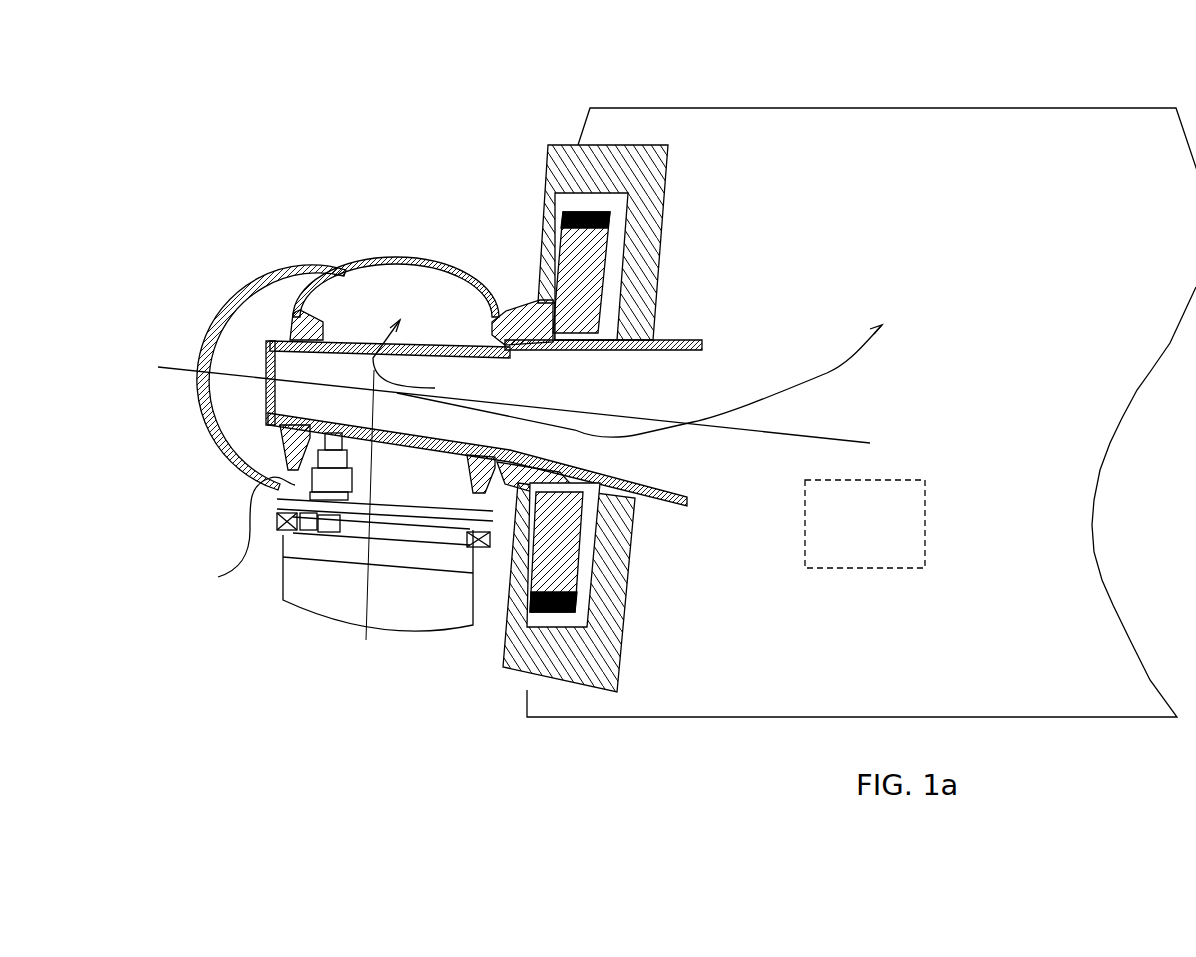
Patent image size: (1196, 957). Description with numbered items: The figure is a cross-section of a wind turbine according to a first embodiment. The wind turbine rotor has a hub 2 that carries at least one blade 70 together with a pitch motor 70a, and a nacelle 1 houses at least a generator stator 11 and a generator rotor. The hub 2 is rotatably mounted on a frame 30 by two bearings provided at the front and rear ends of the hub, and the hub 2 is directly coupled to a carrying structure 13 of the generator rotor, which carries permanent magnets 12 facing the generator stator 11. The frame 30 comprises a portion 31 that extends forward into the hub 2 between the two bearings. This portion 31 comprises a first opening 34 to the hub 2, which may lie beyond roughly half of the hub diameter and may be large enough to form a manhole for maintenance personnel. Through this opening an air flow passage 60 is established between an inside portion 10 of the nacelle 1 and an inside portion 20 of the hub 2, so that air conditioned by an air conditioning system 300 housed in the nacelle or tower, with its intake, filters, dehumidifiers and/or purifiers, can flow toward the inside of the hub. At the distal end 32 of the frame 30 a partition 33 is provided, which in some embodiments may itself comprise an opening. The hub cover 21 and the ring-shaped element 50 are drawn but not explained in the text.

The nacelle 1 is at (861, 368).
The inside portion of the nacelle 10 is at (912, 250).
The generator stator 11 is at (579, 146).
The permanent magnets 12 is at (532, 616).
The carrying structure 13 is at (530, 540).
The hub 2 is at (421, 226).
The inside portion of the hub 20 is at (448, 300).
The dome cover 21 is at (432, 262).
The frame 30 is at (678, 322).
The portion of the frame 31 is at (395, 352).
The distal end 32 is at (273, 428).
The partition 33 is at (262, 360).
The first opening 34 is at (366, 335).
The ring 50 is at (246, 290).
The air flow passage 60 is at (817, 378).
The blade 70 is at (302, 600).
The pitch motor 70a is at (237, 538).
The air conditioning system 300 is at (865, 524).